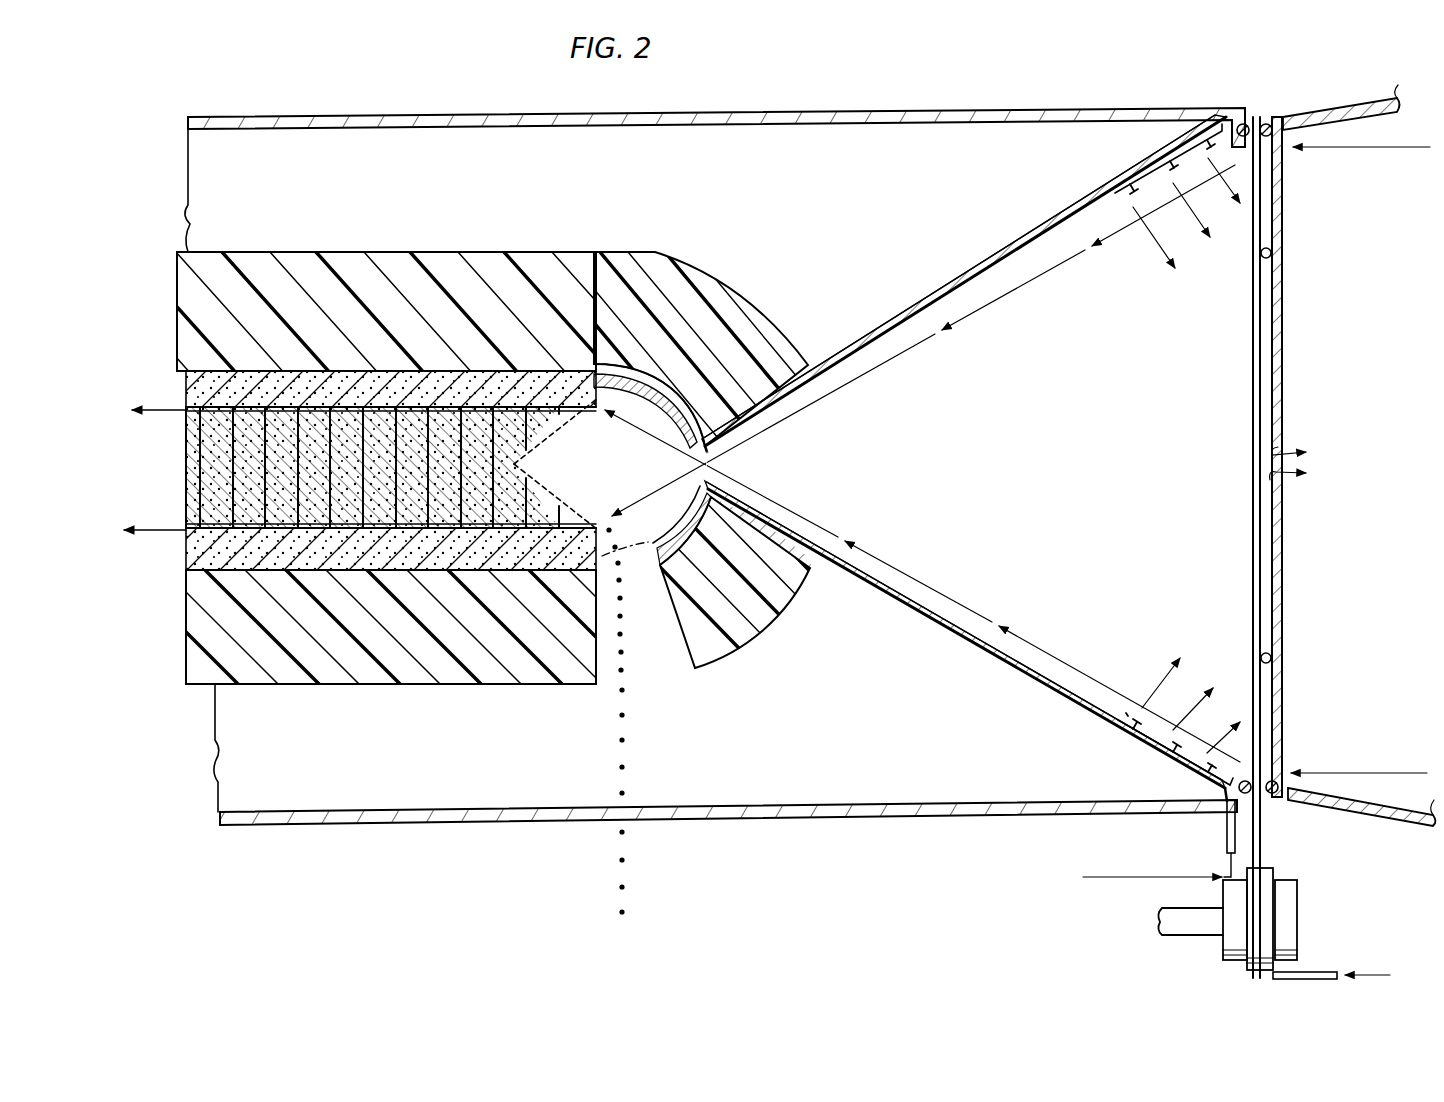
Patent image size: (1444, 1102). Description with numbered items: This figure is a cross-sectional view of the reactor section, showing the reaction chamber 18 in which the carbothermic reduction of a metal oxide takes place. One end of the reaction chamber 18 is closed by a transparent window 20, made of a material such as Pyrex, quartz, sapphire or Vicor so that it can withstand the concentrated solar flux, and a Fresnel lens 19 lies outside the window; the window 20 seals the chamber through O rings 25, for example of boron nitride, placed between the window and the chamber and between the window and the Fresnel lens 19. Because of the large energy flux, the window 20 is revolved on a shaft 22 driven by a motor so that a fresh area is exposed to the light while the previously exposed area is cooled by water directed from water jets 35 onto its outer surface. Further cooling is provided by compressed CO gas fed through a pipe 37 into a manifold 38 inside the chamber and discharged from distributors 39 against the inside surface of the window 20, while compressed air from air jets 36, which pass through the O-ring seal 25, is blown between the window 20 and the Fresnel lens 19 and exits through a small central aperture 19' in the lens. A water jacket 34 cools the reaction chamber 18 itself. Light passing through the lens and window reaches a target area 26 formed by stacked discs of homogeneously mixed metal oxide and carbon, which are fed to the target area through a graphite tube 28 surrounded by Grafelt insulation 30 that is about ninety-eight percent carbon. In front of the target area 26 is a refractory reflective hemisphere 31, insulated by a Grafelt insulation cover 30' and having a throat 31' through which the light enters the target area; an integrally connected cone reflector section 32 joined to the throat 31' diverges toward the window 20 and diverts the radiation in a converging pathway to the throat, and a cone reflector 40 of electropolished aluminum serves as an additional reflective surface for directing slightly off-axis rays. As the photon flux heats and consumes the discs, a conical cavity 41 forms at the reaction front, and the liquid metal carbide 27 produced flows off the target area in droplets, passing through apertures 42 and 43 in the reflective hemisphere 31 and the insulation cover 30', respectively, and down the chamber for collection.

The reaction chamber 18 is at (422, 112).
The Fresnel lens 19 is at (1303, 457).
The central aperture 19' is at (1320, 463).
The transparent window 20 is at (1262, 587).
The shaft 22 is at (1173, 921).
The O rings 25 is at (1267, 113).
The target area 26 is at (186, 463).
The liquid metal carbide 27 is at (625, 717).
The graphite tube 28 is at (186, 560).
The insulation 30 is at (383, 513).
The insulation cover 30' is at (696, 344).
The refractory reflective hemisphere 31 is at (649, 410).
The throat 31' is at (768, 466).
The cone reflector section 32 is at (1020, 240).
The water jacket 34 is at (240, 810).
The water jets 35 is at (1310, 972).
The air jets 36 is at (1277, 253).
The pipe 37 is at (1227, 837).
The manifold 38 is at (1140, 173).
The distributors 39 is at (1123, 707).
The cone reflector 40 is at (1410, 827).
The conical cavity 41 is at (544, 485).
The aperture 42 is at (641, 556).
The aperture 43 is at (672, 652).